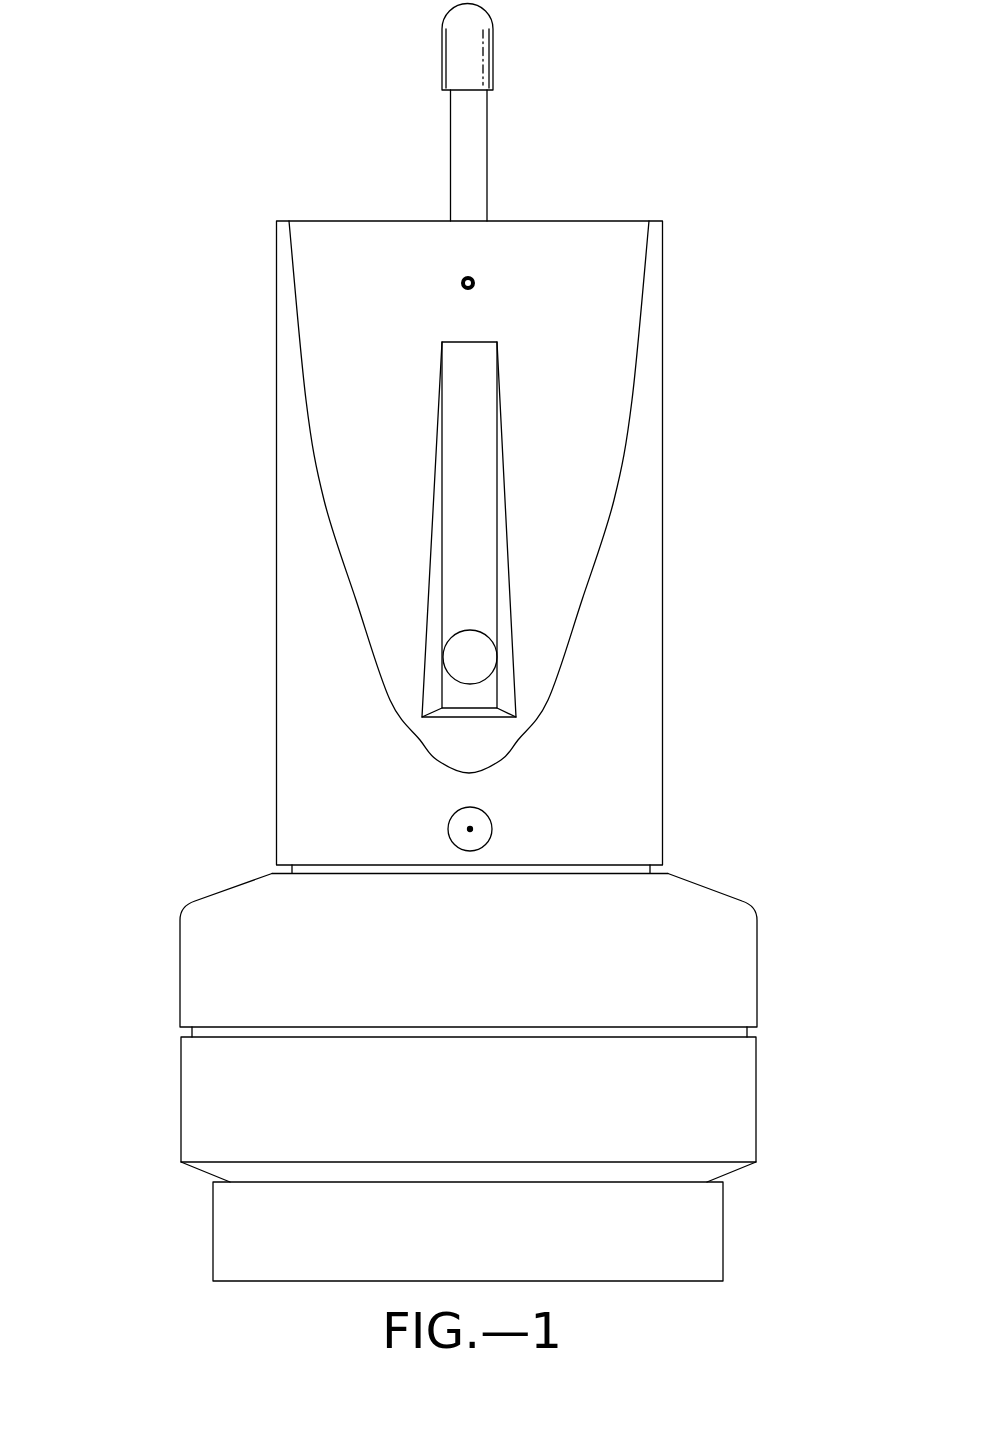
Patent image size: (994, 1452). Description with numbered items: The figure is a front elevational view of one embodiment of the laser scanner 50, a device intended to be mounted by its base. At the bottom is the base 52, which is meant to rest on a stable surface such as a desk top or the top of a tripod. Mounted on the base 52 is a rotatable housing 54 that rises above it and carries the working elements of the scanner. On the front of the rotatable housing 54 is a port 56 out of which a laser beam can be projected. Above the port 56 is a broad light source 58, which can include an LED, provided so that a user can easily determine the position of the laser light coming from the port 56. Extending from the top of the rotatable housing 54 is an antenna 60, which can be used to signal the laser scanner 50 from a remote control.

The laser scanner 50 is at (662, 158).
The base 52 is at (213, 1230).
The rotatable housing 54 is at (276, 725).
The port 56 is at (491, 833).
The broad light source 58 is at (480, 658).
The antenna 60 is at (485, 148).